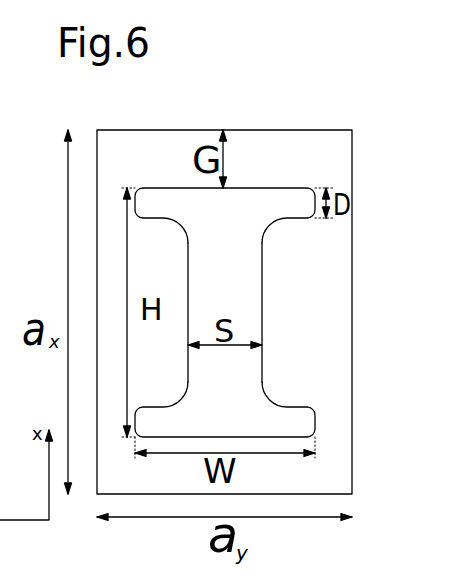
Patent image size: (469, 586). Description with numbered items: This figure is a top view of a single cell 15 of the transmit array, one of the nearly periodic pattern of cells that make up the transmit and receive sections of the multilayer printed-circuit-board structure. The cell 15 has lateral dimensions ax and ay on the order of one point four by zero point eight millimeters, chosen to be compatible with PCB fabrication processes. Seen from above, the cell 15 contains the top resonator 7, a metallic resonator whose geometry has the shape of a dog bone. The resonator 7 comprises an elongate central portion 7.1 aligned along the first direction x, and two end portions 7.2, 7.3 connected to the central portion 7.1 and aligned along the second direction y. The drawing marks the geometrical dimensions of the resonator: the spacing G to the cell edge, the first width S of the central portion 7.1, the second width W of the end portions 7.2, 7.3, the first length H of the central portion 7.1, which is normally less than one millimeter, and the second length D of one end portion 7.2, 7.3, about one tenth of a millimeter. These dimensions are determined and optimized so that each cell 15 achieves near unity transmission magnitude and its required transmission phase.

The cell 15 is at (290, 130).
The top resonator 7 is at (244, 290).
The elongate central portion 7.1 is at (274, 324).
The end portion 7.2 is at (256, 184).
The end portion 7.3 is at (289, 396).